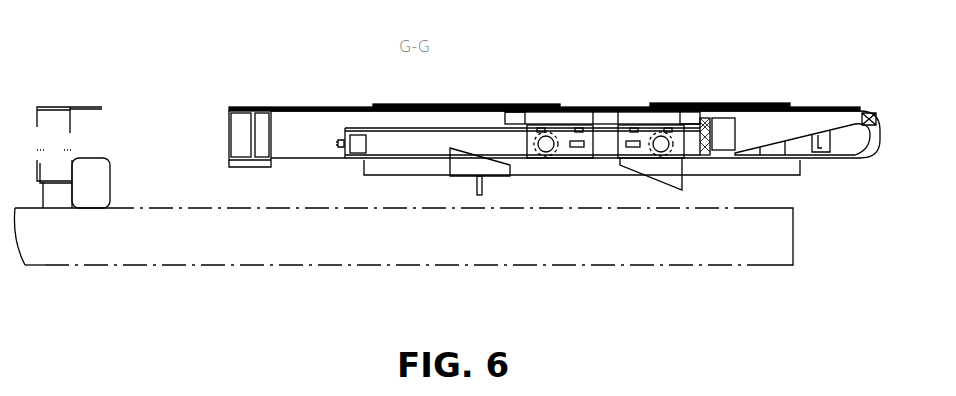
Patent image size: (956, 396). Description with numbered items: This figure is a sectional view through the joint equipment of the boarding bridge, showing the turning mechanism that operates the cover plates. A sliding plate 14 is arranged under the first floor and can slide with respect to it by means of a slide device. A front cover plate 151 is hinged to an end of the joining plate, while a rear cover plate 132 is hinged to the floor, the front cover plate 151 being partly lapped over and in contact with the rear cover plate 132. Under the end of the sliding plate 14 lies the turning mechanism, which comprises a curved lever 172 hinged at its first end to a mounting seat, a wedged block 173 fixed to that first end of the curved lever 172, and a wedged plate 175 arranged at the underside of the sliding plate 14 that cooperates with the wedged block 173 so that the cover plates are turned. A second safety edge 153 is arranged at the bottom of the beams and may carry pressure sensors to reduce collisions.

The sliding plate 14 is at (604, 108).
The rear cover plate 132 is at (493, 105).
The front cover plate 151 is at (747, 108).
The second safety edge 153 is at (380, 177).
The curved lever 172 is at (486, 178).
The wedged block 173 is at (462, 168).
The wedged plate 175 is at (653, 168).